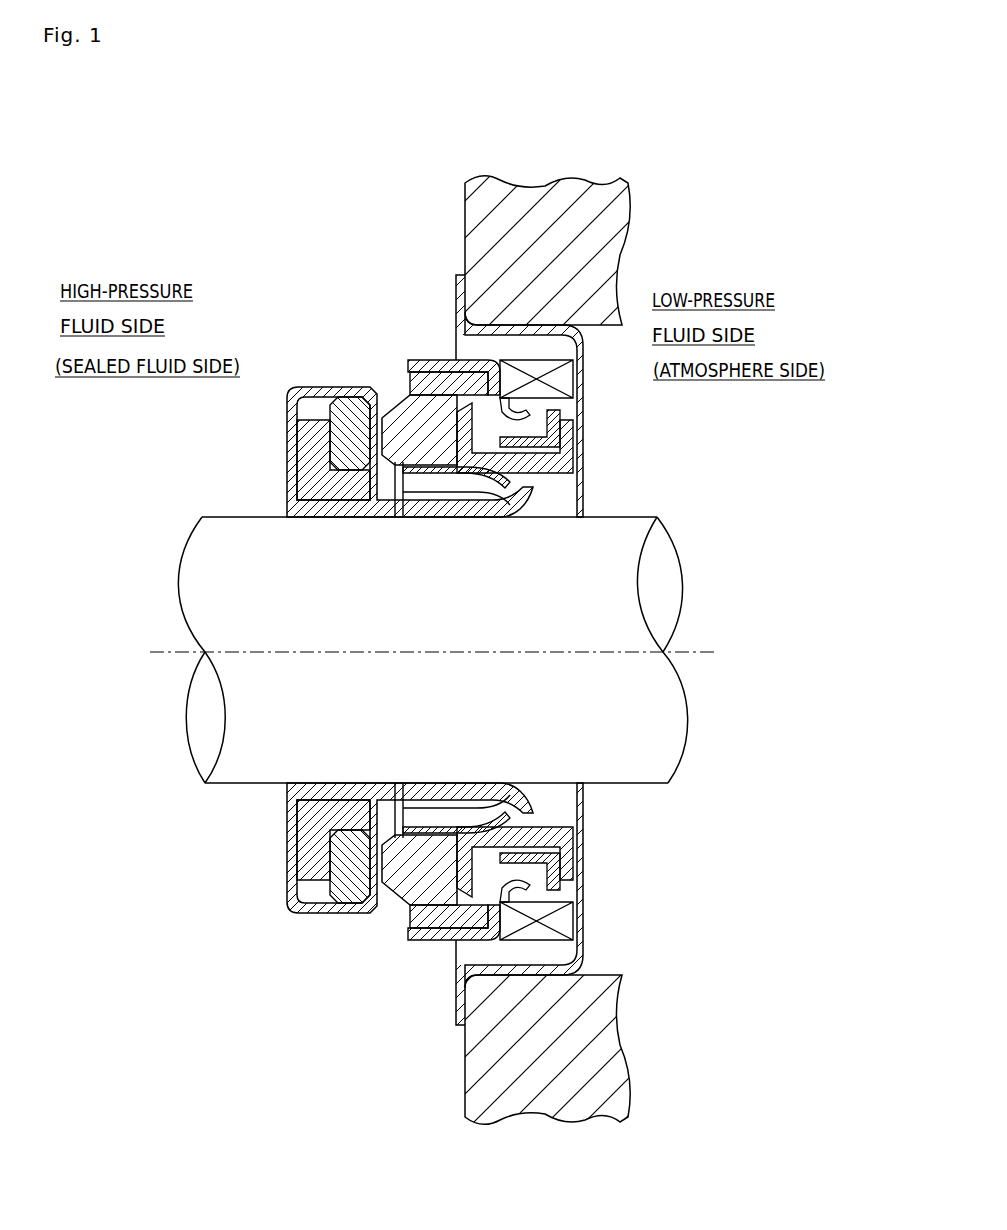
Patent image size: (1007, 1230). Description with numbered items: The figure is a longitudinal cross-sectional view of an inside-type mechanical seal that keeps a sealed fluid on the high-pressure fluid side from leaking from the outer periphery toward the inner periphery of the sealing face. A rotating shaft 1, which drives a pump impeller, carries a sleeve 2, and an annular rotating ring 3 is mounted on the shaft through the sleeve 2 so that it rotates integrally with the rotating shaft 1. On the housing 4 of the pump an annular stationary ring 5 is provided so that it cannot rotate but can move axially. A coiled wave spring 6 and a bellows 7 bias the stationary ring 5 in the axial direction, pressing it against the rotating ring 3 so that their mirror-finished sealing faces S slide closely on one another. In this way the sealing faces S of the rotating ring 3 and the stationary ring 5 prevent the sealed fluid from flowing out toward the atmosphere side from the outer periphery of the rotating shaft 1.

The rotating shaft 1 is at (337, 617).
The sleeve 2 is at (287, 465).
The rotating ring 3 is at (347, 447).
The housing 4 is at (537, 203).
The stationary ring 5 is at (403, 403).
The coiled wave spring 6 is at (566, 386).
The bellows 7 is at (455, 375).
The sealing faces S is at (387, 462).